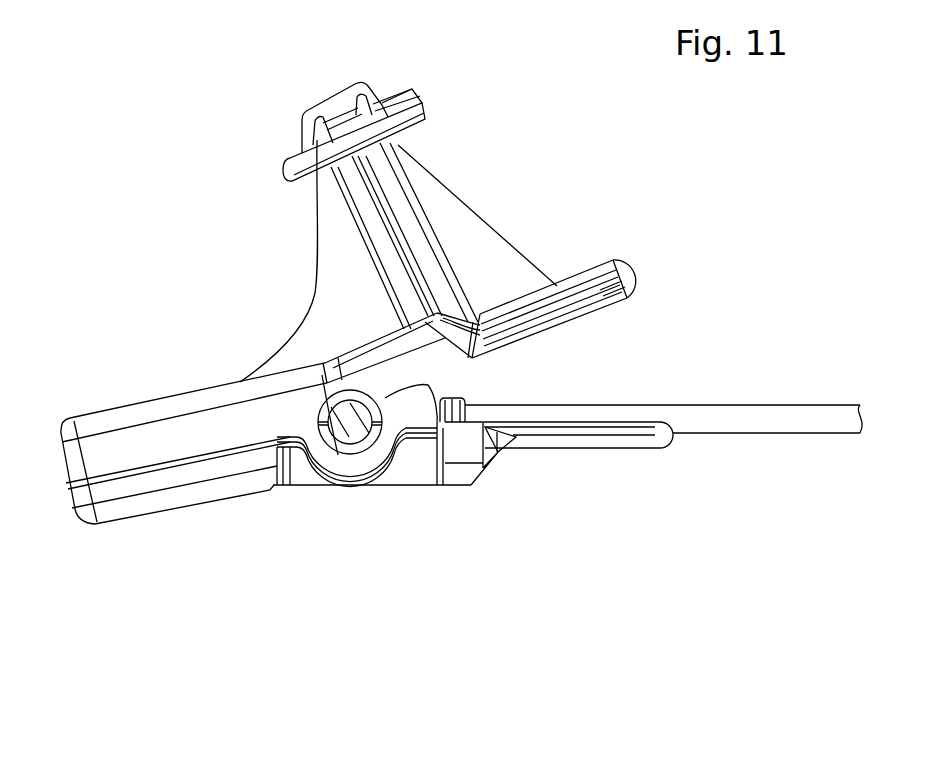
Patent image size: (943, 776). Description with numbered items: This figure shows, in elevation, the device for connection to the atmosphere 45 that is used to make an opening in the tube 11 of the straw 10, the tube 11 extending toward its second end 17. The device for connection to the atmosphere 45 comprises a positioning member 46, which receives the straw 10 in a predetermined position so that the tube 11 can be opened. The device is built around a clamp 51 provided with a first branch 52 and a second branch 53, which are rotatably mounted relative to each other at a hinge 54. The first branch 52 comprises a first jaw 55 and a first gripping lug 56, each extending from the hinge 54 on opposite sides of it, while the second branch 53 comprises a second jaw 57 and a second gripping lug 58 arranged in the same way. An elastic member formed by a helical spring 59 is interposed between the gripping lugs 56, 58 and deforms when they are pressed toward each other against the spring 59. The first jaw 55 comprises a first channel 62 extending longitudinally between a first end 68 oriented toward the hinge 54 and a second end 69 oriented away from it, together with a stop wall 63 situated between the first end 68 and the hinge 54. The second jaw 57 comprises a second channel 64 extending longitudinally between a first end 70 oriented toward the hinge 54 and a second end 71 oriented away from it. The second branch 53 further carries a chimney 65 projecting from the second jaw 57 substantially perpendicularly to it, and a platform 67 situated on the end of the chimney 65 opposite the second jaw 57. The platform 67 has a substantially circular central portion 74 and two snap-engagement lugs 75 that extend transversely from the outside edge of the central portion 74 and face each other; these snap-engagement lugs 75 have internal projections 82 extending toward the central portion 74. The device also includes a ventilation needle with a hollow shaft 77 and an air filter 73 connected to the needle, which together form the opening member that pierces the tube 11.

The straw 10 is at (820, 386).
The tube 11 is at (777, 405).
The second end 17 is at (470, 392).
The device for connection to the atmosphere 45 is at (132, 236).
The positioning member 46 is at (578, 486).
The clamp 51 is at (172, 353).
The first branch 52 is at (293, 488).
The second branch 53 is at (298, 337).
The hinge 54 is at (349, 437).
The first jaw 55 is at (453, 488).
The first gripping lug 56 is at (143, 515).
The second jaw 57 is at (502, 295).
The second gripping lug 58 is at (137, 404).
The helical spring 59 is at (192, 458).
The first channel 62 is at (617, 449).
The stop wall 63 is at (440, 422).
The second channel 64 is at (600, 261).
The chimney 65 is at (500, 181).
The platform 67 is at (425, 121).
The first end 68 is at (508, 465).
The second end 69 is at (680, 452).
The first end 70 is at (470, 298).
The second end 71 is at (657, 239).
The air filter 73 is at (393, 100).
The central portion 74 is at (423, 213).
The snap-engagement lugs 75 is at (317, 97).
The hollow shaft 77 is at (462, 371).
The internal projections 82 is at (300, 112).